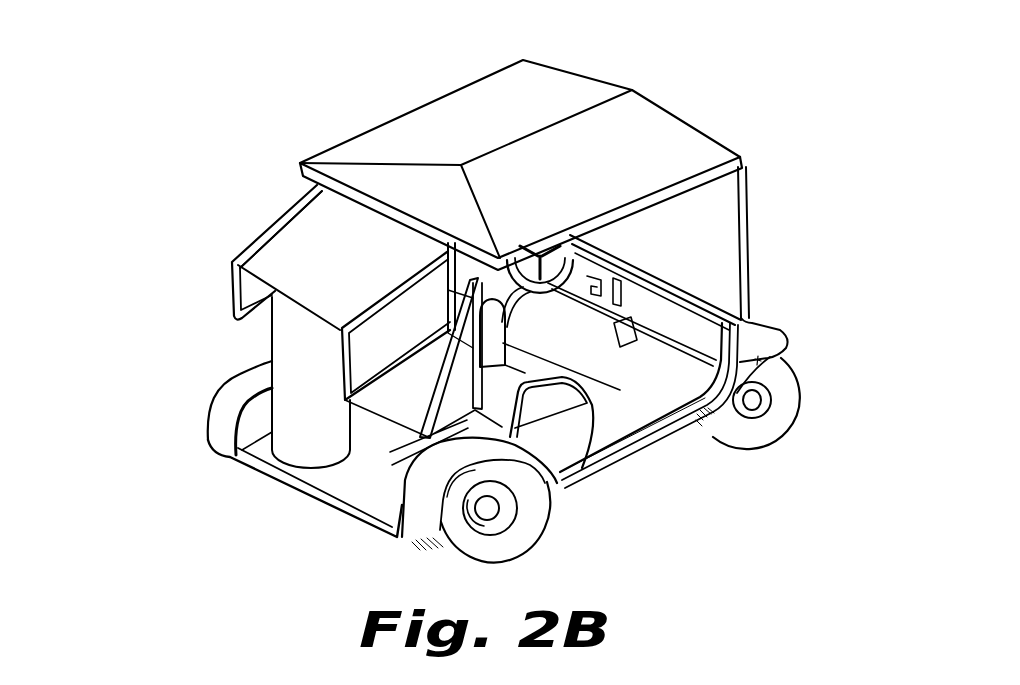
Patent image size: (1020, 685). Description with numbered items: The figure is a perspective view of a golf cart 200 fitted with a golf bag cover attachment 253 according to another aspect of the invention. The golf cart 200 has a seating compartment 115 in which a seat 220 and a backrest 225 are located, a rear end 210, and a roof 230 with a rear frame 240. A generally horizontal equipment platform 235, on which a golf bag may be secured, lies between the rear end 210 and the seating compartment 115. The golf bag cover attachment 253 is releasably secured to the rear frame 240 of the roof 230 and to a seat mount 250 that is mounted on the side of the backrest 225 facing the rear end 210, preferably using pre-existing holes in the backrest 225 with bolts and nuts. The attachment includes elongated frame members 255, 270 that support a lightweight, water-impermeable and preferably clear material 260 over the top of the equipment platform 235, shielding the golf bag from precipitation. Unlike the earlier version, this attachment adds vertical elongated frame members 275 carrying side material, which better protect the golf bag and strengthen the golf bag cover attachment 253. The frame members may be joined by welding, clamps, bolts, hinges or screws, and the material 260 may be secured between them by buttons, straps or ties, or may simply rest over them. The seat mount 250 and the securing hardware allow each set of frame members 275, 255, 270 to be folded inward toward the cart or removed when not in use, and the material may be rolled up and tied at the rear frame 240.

The golf cart 200 is at (778, 117).
The seating compartment 115 is at (655, 403).
The rear end 210 is at (300, 493).
The seat 220 is at (560, 410).
The backrest 225 is at (495, 331).
The roof 230 is at (445, 116).
The equipment platform 235 is at (358, 492).
The rear frame 240 is at (297, 161).
The seat mount 250 is at (446, 321).
The golf bag cover attachment 253 is at (233, 225).
The elongated frame member 255 is at (408, 342).
The material 260 is at (268, 270).
The elongated frame member 270 is at (298, 223).
The vertical elongated frame member 275 is at (333, 385).